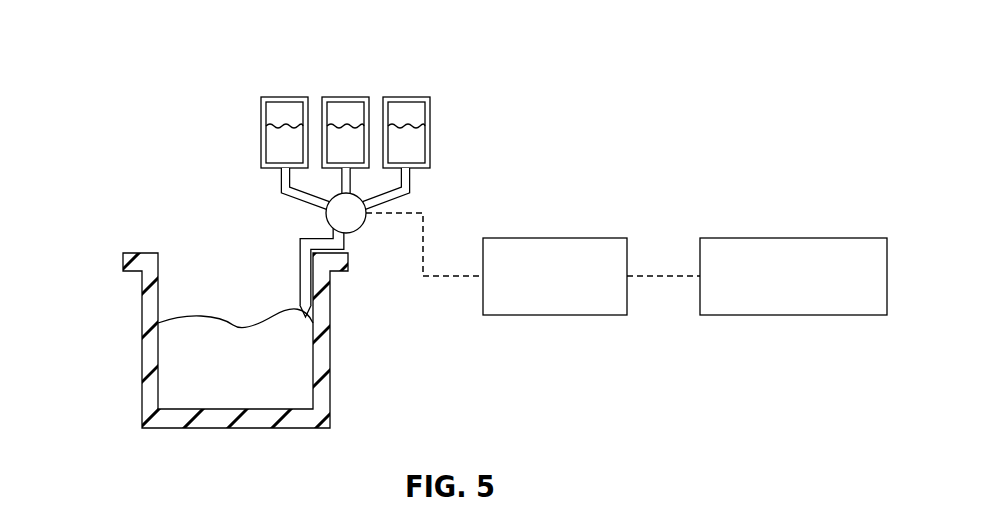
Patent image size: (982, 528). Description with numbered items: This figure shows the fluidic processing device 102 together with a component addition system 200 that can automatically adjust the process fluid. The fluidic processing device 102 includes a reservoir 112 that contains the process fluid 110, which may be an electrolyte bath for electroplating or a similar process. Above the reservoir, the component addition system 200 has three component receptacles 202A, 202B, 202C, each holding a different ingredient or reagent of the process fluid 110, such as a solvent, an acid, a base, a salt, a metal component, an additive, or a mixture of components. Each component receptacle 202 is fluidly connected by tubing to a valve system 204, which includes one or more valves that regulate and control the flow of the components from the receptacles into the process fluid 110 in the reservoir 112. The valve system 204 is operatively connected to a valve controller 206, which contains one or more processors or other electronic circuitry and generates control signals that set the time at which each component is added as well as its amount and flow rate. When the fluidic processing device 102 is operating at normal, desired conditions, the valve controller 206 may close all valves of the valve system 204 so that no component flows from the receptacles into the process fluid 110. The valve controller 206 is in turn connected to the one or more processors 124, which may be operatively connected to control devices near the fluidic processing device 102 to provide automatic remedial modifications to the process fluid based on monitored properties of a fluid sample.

The fluidic processing device 102 is at (274, 334).
The process fluid 110 is at (188, 348).
The reservoir 112 is at (150, 398).
The processors 124 is at (795, 238).
The component addition system 200 is at (535, 168).
The component receptacle 202 is at (345, 99).
The first component receptacle 202A is at (261, 148).
The second component receptacle 202B is at (347, 97).
The third component receptacle 202C is at (430, 138).
The valve system 204 is at (360, 226).
The valve controller 206 is at (555, 238).